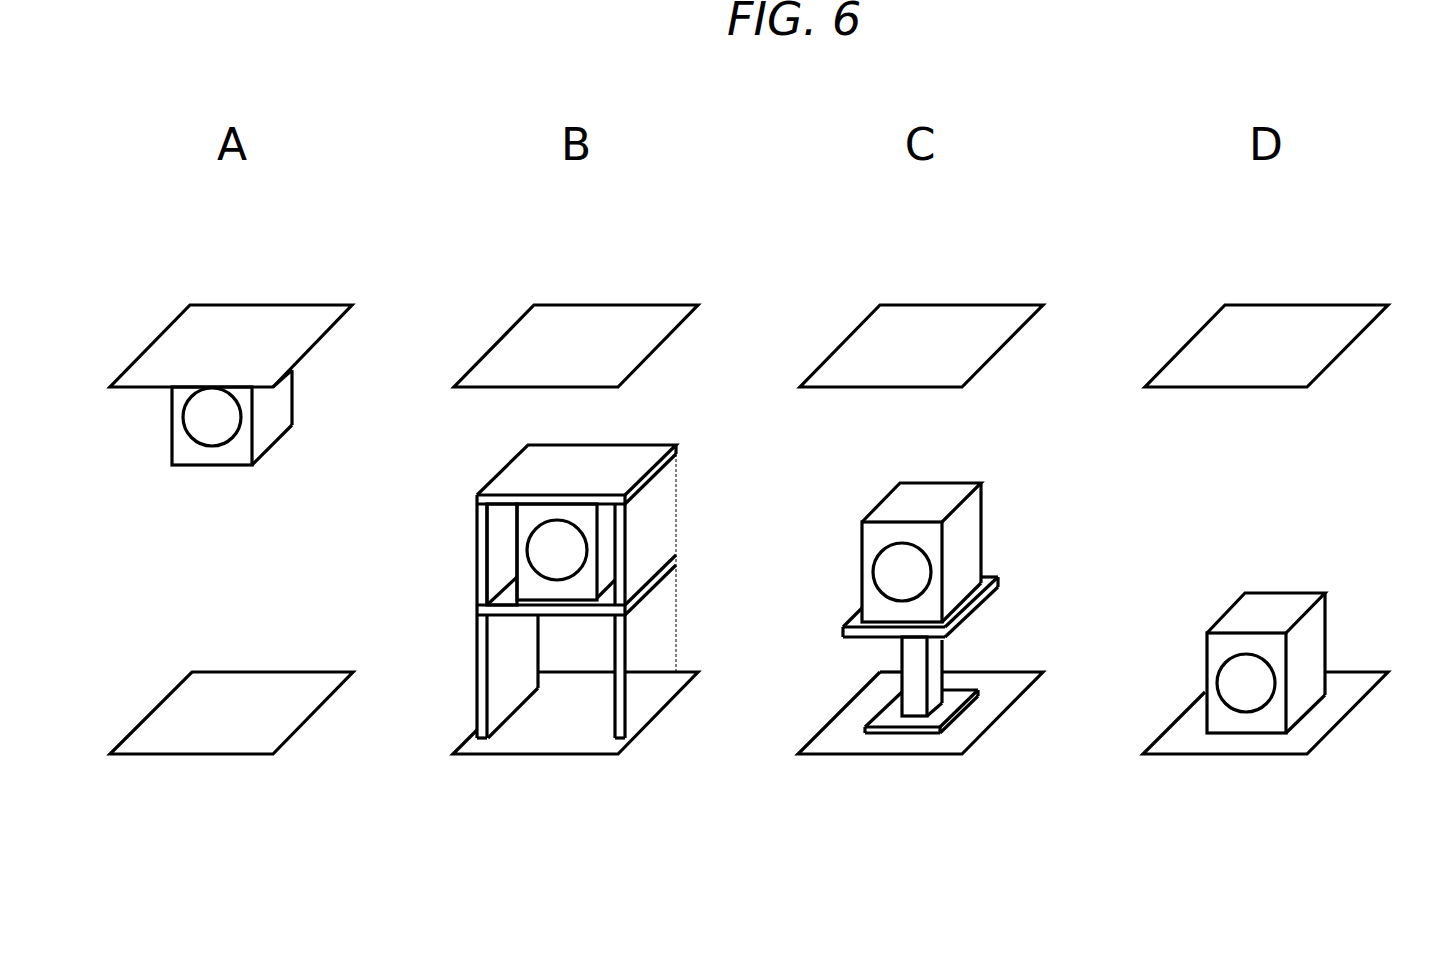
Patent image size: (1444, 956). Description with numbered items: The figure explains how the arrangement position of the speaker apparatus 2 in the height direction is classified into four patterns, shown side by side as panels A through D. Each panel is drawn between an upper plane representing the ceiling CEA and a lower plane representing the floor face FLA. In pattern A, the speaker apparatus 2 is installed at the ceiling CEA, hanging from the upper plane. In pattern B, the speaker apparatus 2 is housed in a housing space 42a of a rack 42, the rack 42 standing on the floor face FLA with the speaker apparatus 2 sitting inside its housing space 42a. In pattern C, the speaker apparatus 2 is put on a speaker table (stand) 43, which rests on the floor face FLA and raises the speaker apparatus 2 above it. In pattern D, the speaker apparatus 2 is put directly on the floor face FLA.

The speaker apparatus 2 is at (212, 468).
The rack 42 is at (658, 524).
The housing space 42a is at (497, 557).
The speaker table (stand) 43 is at (942, 653).
The ceiling CEA is at (317, 305).
The floor face FLA is at (203, 757).